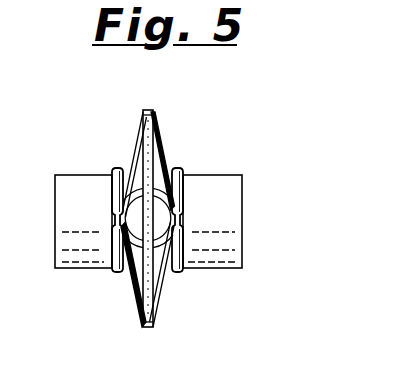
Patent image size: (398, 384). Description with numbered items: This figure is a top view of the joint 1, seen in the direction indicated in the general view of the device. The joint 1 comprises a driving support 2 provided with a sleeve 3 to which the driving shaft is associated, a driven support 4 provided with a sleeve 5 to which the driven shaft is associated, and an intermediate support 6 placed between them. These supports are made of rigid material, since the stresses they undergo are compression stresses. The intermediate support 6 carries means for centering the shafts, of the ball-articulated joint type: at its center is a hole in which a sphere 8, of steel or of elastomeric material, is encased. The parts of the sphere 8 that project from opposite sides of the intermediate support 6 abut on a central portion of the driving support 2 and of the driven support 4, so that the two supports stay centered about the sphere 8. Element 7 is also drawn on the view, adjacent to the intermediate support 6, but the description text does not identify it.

The joint 1 is at (201, 281).
The driving support 2 is at (115, 168).
The sleeve 3 is at (63, 228).
The driven support 4 is at (178, 168).
The sleeve 5 is at (233, 202).
The intermediate support 6 is at (146, 110).
The toggle arm 7 is at (165, 148).
The sphere 8 is at (133, 232).